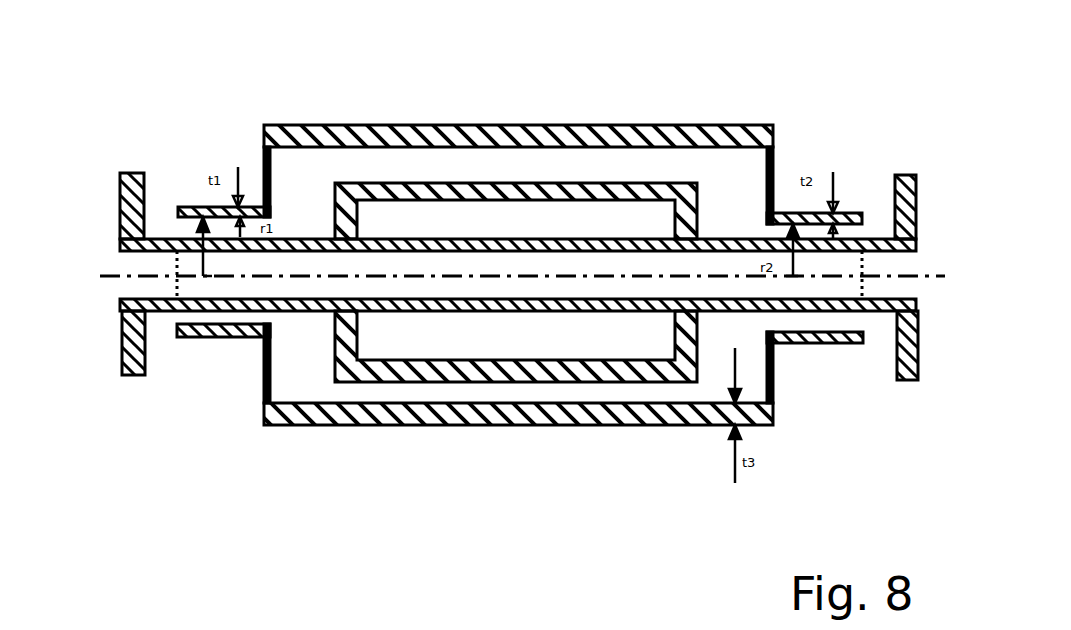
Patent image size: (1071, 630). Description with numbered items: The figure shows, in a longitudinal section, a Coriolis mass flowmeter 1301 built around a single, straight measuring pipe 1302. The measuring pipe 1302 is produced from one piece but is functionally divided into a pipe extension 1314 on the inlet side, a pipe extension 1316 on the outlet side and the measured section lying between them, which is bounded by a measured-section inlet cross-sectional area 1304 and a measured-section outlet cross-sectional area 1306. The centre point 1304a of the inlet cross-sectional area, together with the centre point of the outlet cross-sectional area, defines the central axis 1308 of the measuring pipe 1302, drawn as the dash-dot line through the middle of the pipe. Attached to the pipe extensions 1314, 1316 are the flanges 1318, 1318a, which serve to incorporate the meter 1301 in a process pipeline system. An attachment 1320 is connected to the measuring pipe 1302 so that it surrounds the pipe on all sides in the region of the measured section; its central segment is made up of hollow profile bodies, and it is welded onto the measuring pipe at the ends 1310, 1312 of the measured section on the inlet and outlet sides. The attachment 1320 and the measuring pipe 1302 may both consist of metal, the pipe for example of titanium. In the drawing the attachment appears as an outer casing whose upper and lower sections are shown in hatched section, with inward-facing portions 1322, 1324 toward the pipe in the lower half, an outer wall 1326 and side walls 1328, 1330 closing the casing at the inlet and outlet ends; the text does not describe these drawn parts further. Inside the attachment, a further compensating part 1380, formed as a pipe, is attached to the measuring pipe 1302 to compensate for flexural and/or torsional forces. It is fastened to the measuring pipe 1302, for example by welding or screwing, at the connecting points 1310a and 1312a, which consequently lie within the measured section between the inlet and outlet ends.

The Coriolis mass flowmeter 1301 is at (540, 561).
The measuring pipe 1302 is at (447, 311).
The measured-section inlet cross-sectional area 1304 is at (167, 288).
The centre point 1304a is at (170, 272).
The measured-section outlet cross-sectional area 1306 is at (842, 311).
The central axis 1308 is at (940, 288).
The end of the measured section on the inlet side 1310 is at (177, 236).
The connecting point 1310a is at (358, 233).
The end of the measured section on the outlet side 1312 is at (879, 237).
The connecting point 1312a is at (670, 234).
The pipe extension on the inlet side 1314 is at (167, 311).
The pipe extension on the outlet side 1316 is at (873, 311).
The flange 1318 is at (125, 238).
The flange 1318a is at (915, 173).
The attachment 1320 is at (418, 115).
The first lower ring 1322 is at (227, 337).
The second lower ring 1324 is at (800, 343).
The outer shell lower wall 1326 is at (605, 425).
The shell first side wall 1328 is at (264, 168).
The shell second side wall 1330 is at (772, 185).
The compensating part 1380 is at (520, 178).